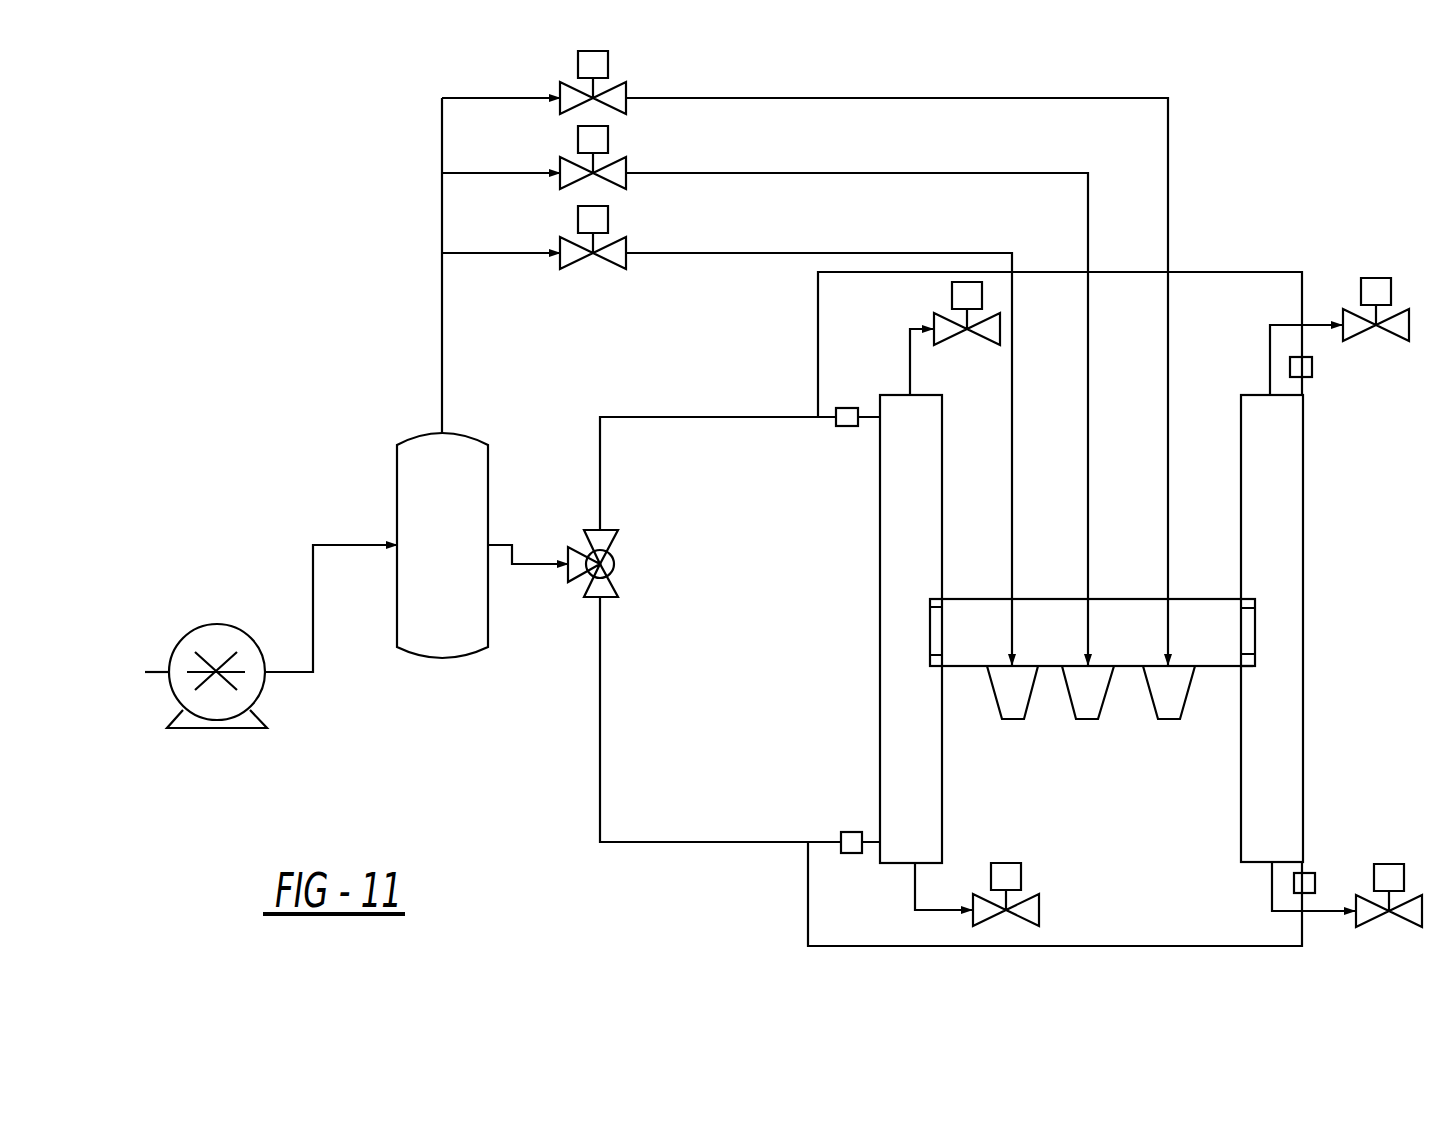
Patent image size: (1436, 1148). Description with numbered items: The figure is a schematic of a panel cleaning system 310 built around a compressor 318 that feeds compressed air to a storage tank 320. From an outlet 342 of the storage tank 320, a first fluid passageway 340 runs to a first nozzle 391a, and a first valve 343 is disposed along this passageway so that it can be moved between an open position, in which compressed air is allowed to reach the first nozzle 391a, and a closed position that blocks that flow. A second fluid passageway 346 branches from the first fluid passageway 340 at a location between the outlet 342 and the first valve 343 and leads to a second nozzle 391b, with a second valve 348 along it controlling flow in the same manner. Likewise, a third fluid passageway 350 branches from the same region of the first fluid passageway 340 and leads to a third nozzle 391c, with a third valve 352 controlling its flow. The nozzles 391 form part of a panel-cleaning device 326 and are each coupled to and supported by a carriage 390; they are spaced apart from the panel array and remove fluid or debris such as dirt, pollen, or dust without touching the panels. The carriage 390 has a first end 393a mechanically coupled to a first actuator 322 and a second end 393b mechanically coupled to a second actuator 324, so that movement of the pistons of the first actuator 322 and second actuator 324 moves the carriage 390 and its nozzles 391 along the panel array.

The system 310 is at (1284, 180).
The compressor 318 is at (212, 622).
The storage tank 320 is at (403, 440).
The first actuator 322 is at (878, 750).
The second actuator 324 is at (1305, 553).
The panel-cleaning device 326 is at (1052, 597).
The first fluid passageway 340 is at (933, 97).
The outlet 342 is at (444, 431).
The first valve 343 is at (624, 108).
The second fluid passageway 346 is at (873, 172).
The second valve 348 is at (622, 188).
The third fluid passageway 350 is at (703, 256).
The third valve 352 is at (615, 267).
The carriage 390 is at (1210, 598).
The nozzles 391 is at (1076, 747).
The first nozzle 391a is at (1173, 707).
The second nozzle 391b is at (1090, 692).
The third nozzle 391c is at (1010, 692).
The first end 393a is at (943, 598).
The second end 393b is at (1237, 670).